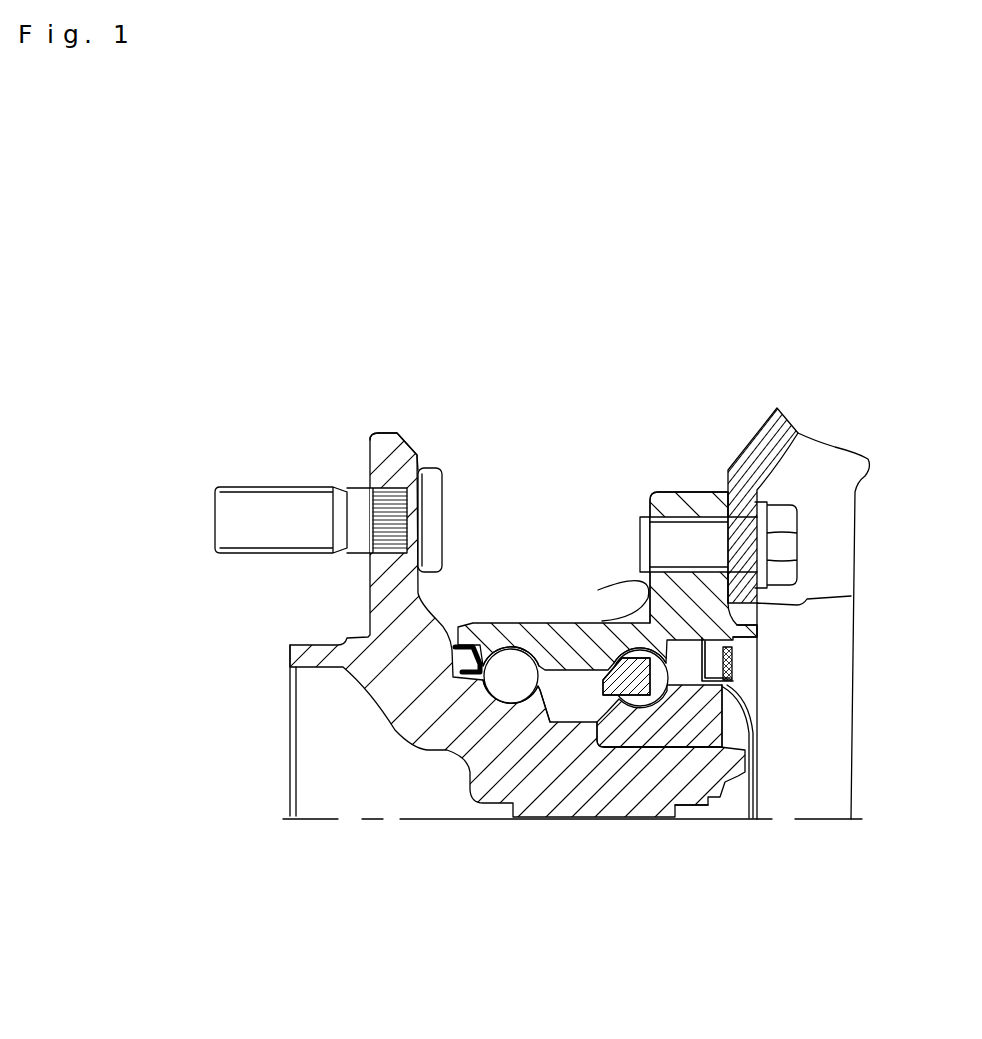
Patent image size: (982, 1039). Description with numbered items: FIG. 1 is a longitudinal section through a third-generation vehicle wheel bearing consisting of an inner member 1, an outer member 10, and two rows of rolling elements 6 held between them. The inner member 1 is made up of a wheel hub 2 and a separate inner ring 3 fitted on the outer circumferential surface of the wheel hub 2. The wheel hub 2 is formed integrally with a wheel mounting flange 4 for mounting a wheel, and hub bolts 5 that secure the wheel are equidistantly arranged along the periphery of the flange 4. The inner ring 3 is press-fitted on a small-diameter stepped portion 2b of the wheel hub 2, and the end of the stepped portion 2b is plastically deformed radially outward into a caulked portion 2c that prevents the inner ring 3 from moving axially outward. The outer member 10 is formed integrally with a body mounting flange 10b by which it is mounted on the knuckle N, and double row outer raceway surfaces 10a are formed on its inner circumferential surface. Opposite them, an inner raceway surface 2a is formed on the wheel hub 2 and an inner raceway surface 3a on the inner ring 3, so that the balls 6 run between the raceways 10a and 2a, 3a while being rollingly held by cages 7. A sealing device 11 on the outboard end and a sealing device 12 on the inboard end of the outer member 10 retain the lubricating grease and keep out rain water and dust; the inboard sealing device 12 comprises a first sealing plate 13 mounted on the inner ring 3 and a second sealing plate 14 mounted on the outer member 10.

The inner member 1 is at (398, 747).
The wheel hub 2 is at (387, 687).
The inner raceway surface 2a is at (483, 684).
The stepped portion 2b is at (665, 733).
The caulked portion 2c is at (648, 815).
The inner ring 3 is at (705, 713).
The inner raceway surface 3a is at (695, 690).
The wheel mounting flange 4 is at (388, 440).
The hub bolt 5 is at (247, 500).
The rolling element 6 is at (650, 706).
The cage 7 is at (587, 676).
The outer member 10 is at (545, 640).
The outer raceway surface 10a is at (502, 656).
The body mounting flange 10b is at (702, 497).
The sealing device 11 is at (452, 655).
The sealing device 12 is at (745, 645).
The first sealing plate 13 is at (740, 667).
The second sealing plate 14 is at (687, 653).
The knuckle N is at (770, 421).